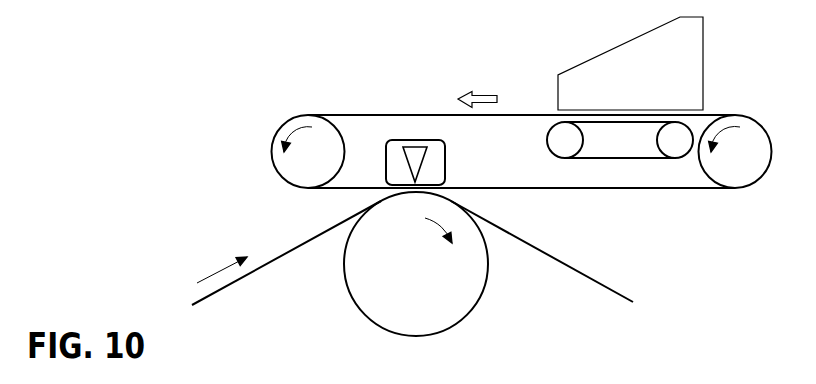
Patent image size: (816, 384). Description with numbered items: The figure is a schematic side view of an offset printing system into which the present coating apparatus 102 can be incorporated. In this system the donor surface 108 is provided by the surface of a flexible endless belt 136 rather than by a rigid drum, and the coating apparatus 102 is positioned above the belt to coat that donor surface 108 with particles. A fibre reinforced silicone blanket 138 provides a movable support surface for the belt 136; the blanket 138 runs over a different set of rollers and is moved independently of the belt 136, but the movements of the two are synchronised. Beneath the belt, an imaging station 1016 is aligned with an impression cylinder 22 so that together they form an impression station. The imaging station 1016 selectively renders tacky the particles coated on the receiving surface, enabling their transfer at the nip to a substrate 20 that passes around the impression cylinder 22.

The donor surface 108 is at (396, 115).
The flexible endless belt 136 is at (355, 97).
The coating apparatus 102 is at (653, 94).
The fibre reinforced silicone blanket 138 is at (617, 160).
The imaging station 1016 is at (445, 163).
The impression cylinder 22 is at (343, 277).
The substrate 20 is at (605, 278).